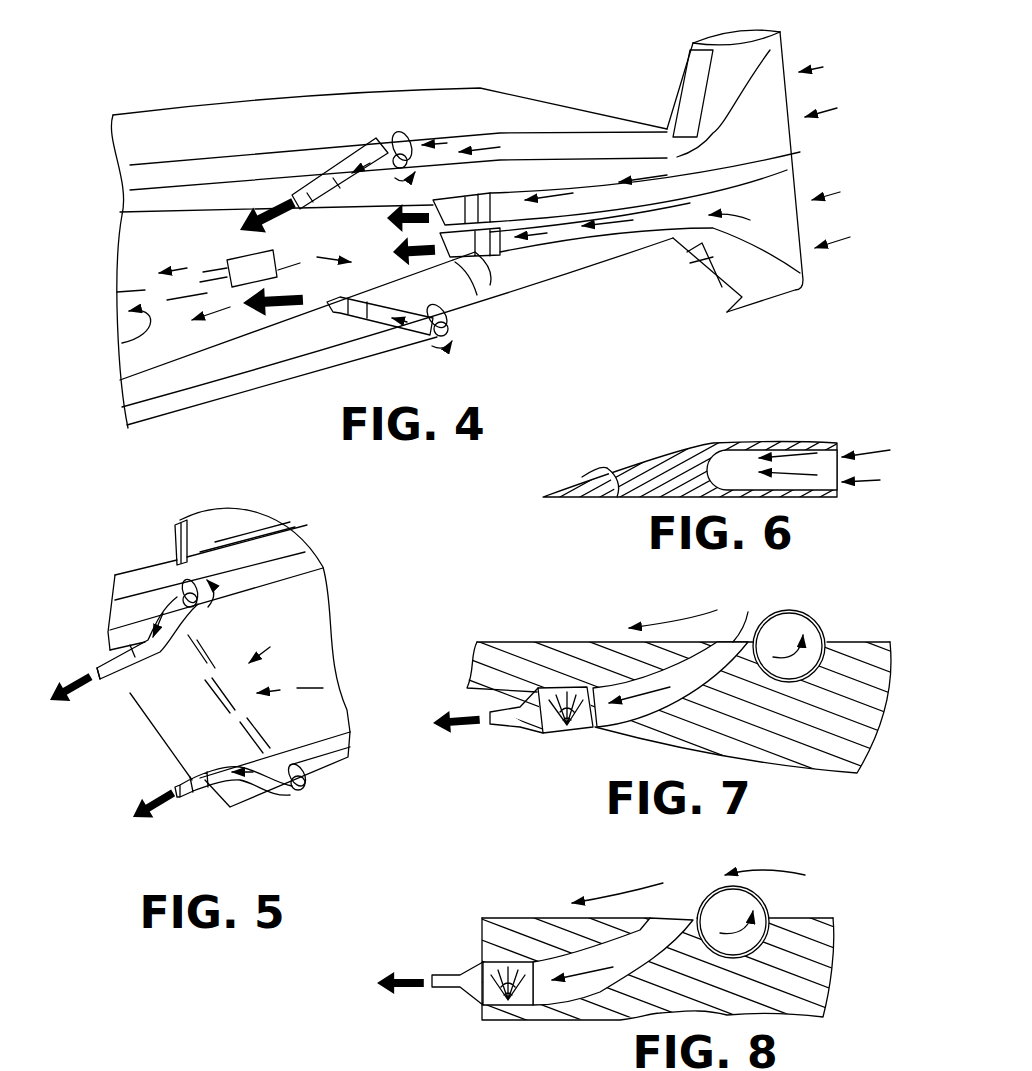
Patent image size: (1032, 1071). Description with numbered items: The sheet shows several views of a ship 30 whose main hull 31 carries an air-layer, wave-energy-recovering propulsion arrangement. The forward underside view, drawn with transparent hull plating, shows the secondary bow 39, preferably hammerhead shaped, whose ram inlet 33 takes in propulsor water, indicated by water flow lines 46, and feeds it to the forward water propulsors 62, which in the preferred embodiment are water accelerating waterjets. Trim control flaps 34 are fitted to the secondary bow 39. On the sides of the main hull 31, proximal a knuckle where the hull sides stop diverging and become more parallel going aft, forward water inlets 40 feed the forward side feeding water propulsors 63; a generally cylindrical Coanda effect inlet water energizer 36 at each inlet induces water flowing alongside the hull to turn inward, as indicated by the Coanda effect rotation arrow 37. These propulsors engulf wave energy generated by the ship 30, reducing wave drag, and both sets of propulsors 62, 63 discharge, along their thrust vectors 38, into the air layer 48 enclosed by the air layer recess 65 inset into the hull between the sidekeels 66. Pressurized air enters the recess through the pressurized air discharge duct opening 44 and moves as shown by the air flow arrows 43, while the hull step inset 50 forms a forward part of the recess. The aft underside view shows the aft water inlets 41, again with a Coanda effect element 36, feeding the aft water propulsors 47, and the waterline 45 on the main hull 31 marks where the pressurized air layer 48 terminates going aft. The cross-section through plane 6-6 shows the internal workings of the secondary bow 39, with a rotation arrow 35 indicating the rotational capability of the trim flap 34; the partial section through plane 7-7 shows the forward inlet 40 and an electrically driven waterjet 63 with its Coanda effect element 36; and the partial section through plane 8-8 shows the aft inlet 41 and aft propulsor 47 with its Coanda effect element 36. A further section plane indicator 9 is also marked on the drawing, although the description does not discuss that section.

In FIG. 4, the section plane 6- 6 is at (717, 267).
In FIG. 4, the section plane 7- 7 is at (490, 100).
In FIG. 5, the section plane 8- 8 is at (257, 522).
In FIG. 4, the section line 9- 9 is at (143, 290).
In FIG. 4, the ship 30 is at (152, 137).
In FIG. 4, the main hull 31 is at (216, 133).
In FIG. 5, the main hull 31 is at (148, 562).
In FIG. 7, the main hull 31 is at (508, 638).
In FIG. 8, the main hull 31 is at (493, 918).
In FIG. 4, the ram inlet 33 is at (793, 100).
In FIG. 6, the ram inlet 33 is at (840, 453).
In FIG. 4, the trim control flap 34 is at (717, 285).
In FIG. 6, the trim control flap 34 is at (582, 477).
In FIG. 6, the rotation arrow 35 is at (533, 460).
In FIG. 4, the Coanda effect inlet water energizer 36 is at (404, 138).
In FIG. 5, the Coanda effect inlet water energizer 36 is at (307, 782).
In FIG. 7, the Coanda effect inlet water energizer 36 is at (813, 633).
In FIG. 8, the Coanda effect inlet water energizer 36 is at (757, 912).
In FIG. 4, the Coanda effect rotation arrow 37 is at (447, 303).
In FIG. 5, the Coanda effect rotation arrow 37 is at (293, 757).
In FIG. 7, the Coanda effect rotation arrow 37 is at (823, 667).
In FIG. 8, the Coanda effect rotation arrow 37 is at (760, 950).
In FIG. 4, the water propulsor thrust vector 38 is at (273, 313).
In FIG. 5, the water propulsor thrust vector 38 is at (167, 800).
In FIG. 7, the water propulsor thrust vector 38 is at (470, 727).
In FIG. 8, the water propulsor thrust vector 38 is at (403, 975).
In FIG. 4, the secondary bow 39 is at (770, 50).
In FIG. 6, the secondary bow 39 is at (703, 442).
In FIG. 4, the propulsor main hull forward water inlet 40 is at (433, 337).
In FIG. 7, the propulsor main hull forward water inlet 40 is at (698, 672).
In FIG. 5, the aft water propulsor water inlet 41 is at (180, 607).
In FIG. 8, the aft water propulsor water inlet 41 is at (645, 949).
In FIG. 4, the air flow arrows 43 is at (122, 343).
In FIG. 5, the air flow arrows 43 is at (303, 615).
In FIG. 4, the pressurized air discharge duct opening 44 is at (273, 272).
In FIG. 5, the waterline 45 is at (273, 533).
In FIG. 4, the water flow lines 46 is at (715, 152).
In FIG. 5, the water flow lines 46 is at (281, 797).
In FIG. 6, the water flow lines 46 is at (883, 493).
In FIG. 7, the water flow lines 46 is at (775, 600).
In FIG. 5, the water propulsor 47 is at (131, 682).
In FIG. 7, the water propulsor 47 is at (583, 727).
In FIG. 8, the water propulsor 47 is at (490, 968).
In FIG. 4, the air layer 48 is at (127, 238).
In FIG. 5, the air layer 48 is at (310, 600).
In FIG. 4, the hull step inset 50 is at (463, 267).
In FIG. 4, the forward water propulsor 62 is at (465, 203).
In FIG. 4, the forward side feeding water propulsor 63 is at (353, 302).
In FIG. 4, the air layer recess 65 is at (156, 353).
In FIG. 5, the air layer recess 65 is at (267, 613).
In FIG. 4, the sidekeels 66 is at (262, 203).
In FIG. 5, the sidekeels 66 is at (303, 563).